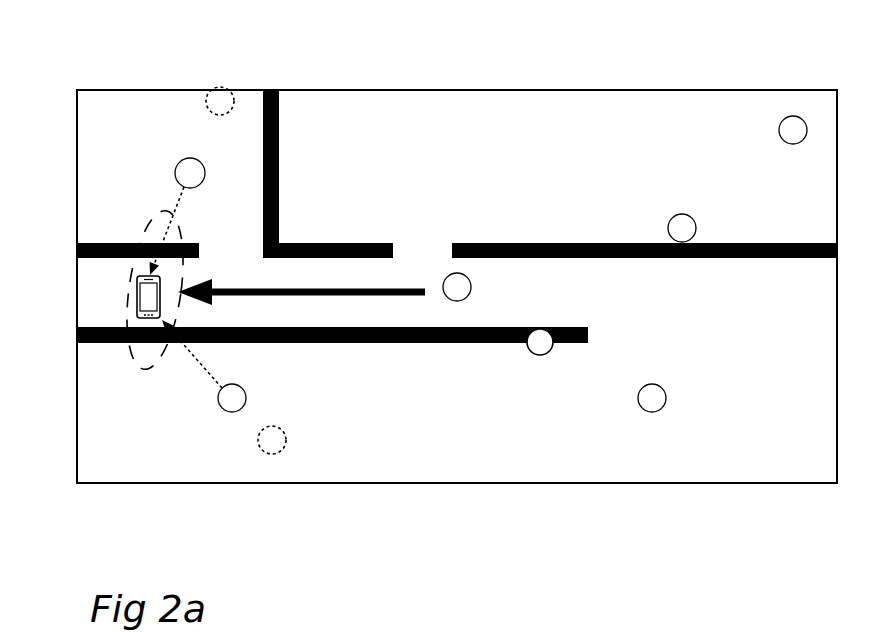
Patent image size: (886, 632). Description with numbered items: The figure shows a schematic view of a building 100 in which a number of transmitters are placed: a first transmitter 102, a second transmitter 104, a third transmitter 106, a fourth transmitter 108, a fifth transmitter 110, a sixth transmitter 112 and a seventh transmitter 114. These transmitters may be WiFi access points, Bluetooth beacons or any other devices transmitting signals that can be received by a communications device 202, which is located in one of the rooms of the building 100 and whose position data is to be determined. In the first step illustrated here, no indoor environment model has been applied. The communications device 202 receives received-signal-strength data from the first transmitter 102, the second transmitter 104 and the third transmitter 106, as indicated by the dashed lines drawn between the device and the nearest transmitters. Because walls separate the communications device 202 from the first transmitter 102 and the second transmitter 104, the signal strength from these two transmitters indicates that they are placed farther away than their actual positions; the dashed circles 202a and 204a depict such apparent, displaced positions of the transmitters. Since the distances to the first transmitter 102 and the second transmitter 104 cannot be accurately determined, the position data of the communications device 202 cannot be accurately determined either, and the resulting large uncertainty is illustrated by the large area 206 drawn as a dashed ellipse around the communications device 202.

The building 100 is at (707, 68).
The first transmitter 102 is at (183, 176).
The second transmitter 104 is at (244, 397).
The third transmitter 106 is at (466, 280).
The fourth transmitter 108 is at (552, 350).
The fifth transmitter 110 is at (662, 392).
The sixth transmitter 112 is at (686, 226).
The seventh transmitter 114 is at (784, 134).
The communications device 202 is at (136, 306).
The prior position of mobile device 202a is at (220, 96).
The prior position of beacon 204a is at (278, 438).
The large area 206 is at (190, 380).